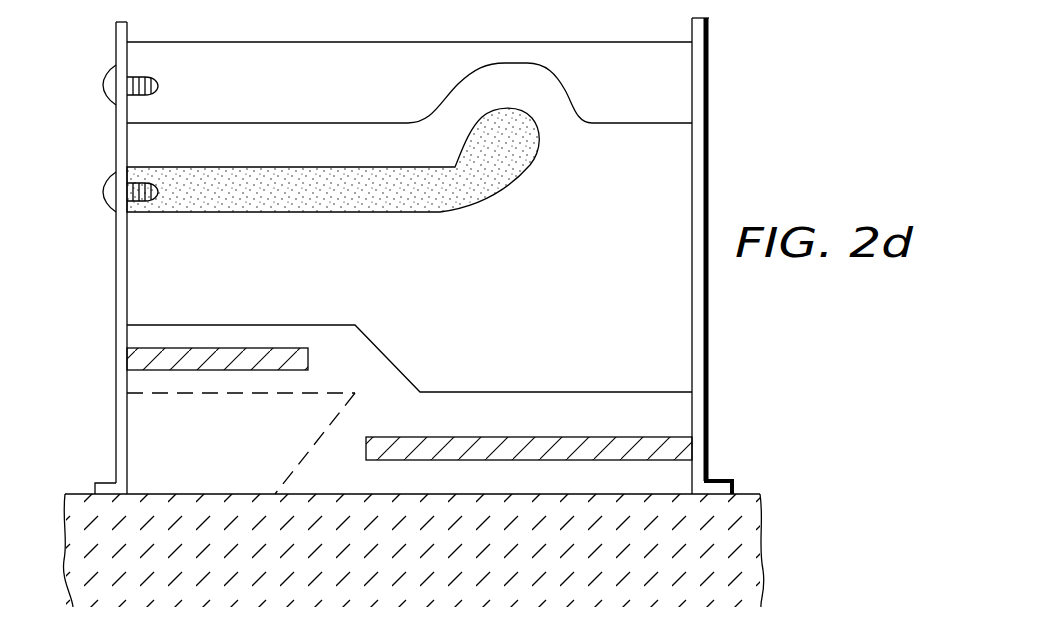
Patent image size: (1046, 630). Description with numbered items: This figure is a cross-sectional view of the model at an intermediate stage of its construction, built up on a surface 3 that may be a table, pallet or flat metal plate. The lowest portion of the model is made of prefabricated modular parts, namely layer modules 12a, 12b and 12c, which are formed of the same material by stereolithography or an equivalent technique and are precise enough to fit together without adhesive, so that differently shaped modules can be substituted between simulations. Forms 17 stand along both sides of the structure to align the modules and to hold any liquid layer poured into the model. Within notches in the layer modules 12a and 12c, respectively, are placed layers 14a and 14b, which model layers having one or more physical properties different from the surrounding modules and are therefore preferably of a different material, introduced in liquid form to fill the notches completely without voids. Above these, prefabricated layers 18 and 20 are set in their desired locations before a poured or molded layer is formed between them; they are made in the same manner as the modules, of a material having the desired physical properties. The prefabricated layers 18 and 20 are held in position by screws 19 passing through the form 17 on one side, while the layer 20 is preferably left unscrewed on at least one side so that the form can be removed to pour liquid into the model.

The surface 3 is at (409, 561).
The layer module 12a is at (356, 483).
The layer module 12b is at (231, 460).
The layer module 12c is at (369, 378).
The layer 14a is at (680, 446).
The layer 14b is at (127, 357).
The form 17 is at (116, 282).
The prefabricated layer 18 is at (380, 198).
The screws 19 is at (106, 82).
The prefabricated layer 20 is at (368, 90).